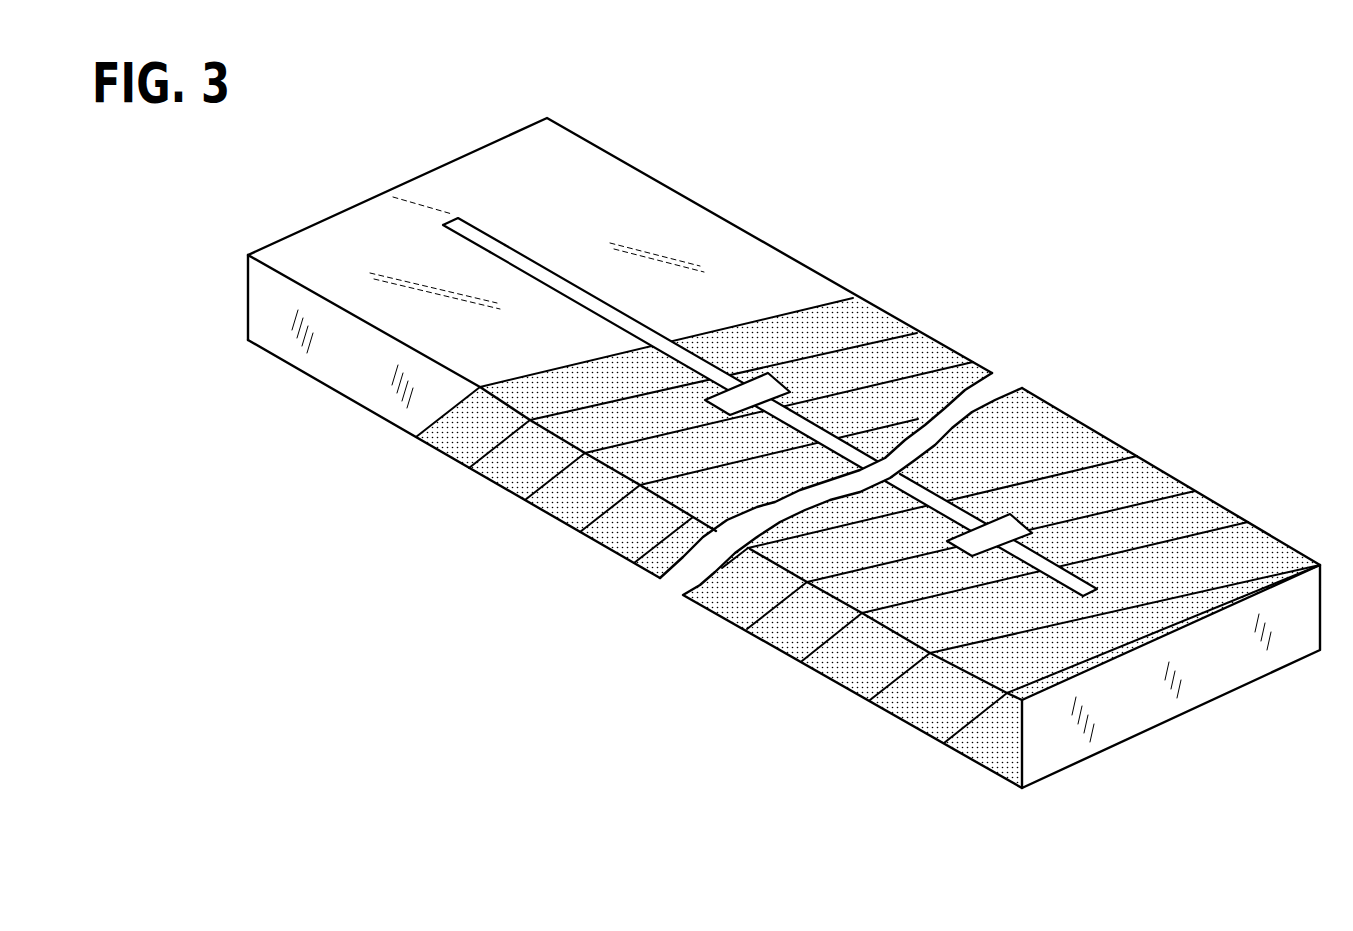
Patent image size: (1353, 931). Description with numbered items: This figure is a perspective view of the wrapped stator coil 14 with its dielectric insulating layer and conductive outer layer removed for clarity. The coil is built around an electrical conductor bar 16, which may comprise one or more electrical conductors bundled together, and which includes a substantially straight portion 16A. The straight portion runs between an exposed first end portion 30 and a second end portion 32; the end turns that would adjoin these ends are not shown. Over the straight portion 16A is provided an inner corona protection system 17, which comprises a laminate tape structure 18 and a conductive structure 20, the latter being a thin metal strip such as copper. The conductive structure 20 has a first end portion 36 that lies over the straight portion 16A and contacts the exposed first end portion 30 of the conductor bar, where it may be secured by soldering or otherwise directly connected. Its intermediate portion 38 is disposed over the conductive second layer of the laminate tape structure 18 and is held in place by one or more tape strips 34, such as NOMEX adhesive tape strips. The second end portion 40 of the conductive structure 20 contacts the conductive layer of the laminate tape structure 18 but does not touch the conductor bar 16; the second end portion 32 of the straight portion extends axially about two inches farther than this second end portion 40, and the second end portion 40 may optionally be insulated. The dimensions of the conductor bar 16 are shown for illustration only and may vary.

The wrapped stator coil 14 is at (697, 176).
The electrical conductor bar 16 is at (276, 305).
The straight portion 16A is at (708, 649).
The inner corona protection system 17 is at (482, 508).
The laminate tape structure 18 is at (433, 457).
The conductive structure 20 is at (617, 318).
The first end portion 30 is at (337, 243).
The second end portion 32 is at (973, 752).
The tape strips 34 is at (757, 385).
The first end portion 36 is at (499, 240).
The intermediate portion 38 is at (819, 423).
The second end portion 40 is at (1092, 580).